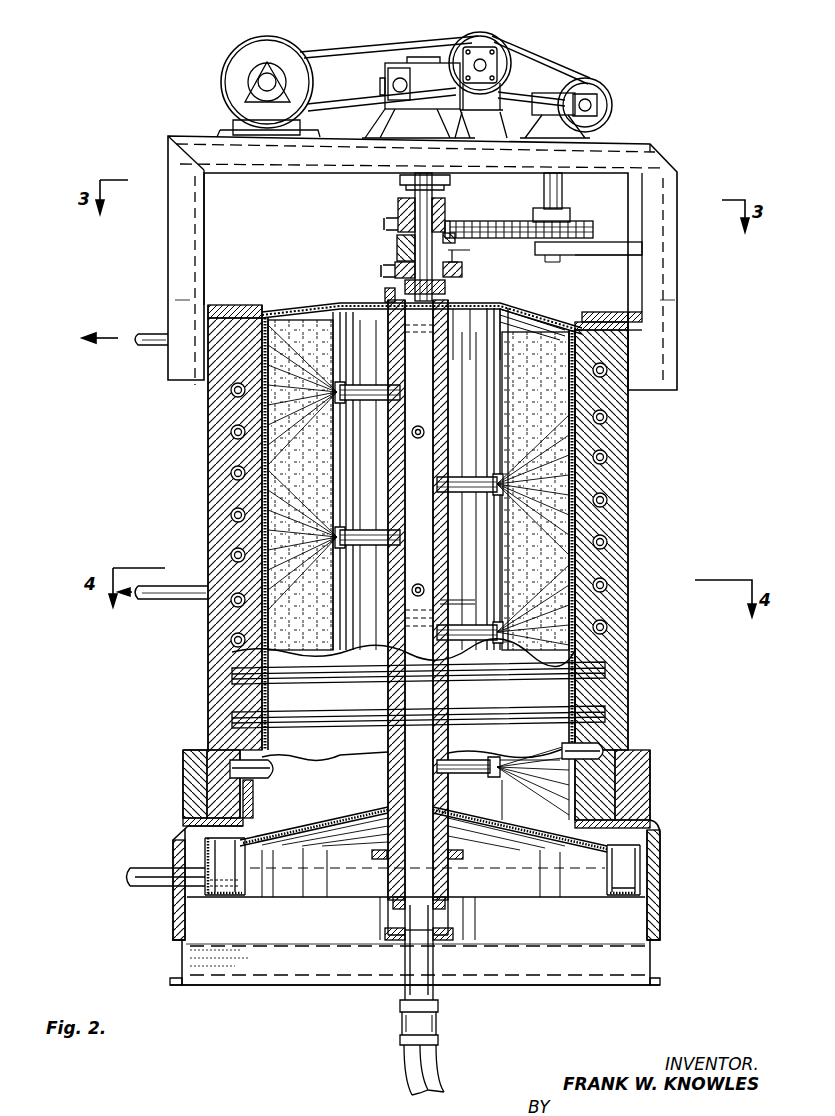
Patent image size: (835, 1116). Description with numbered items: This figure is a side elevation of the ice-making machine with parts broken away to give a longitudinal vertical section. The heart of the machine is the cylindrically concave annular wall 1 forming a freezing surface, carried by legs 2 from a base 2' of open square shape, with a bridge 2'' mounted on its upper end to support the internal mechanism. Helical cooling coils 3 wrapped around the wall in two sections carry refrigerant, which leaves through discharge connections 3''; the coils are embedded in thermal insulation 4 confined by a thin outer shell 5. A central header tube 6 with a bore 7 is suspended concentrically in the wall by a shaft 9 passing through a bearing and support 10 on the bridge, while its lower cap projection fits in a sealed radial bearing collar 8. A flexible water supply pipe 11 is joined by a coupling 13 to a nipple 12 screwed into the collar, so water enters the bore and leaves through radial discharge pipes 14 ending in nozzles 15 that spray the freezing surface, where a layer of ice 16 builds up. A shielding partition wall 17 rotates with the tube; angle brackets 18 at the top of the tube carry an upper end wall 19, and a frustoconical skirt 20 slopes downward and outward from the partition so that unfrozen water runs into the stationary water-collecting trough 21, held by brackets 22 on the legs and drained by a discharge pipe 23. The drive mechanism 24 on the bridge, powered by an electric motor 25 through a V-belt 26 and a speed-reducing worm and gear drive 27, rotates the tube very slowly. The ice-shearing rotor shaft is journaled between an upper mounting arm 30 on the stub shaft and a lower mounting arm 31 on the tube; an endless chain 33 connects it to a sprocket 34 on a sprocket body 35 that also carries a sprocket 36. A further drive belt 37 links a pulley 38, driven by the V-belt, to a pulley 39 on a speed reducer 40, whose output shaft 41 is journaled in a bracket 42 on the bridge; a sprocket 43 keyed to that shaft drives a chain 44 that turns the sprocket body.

The annular wall 1 is at (595, 527).
The legs 2 is at (414, 867).
The base 2' is at (429, 964).
The bridge 2'' is at (438, 263).
The cooling coils 3 is at (396, 534).
The discharge connections 3'' is at (171, 466).
The thermal insulation 4 is at (610, 653).
The outer shell 5 is at (615, 717).
The central header tube 6 is at (448, 555).
The bore 7 is at (408, 520).
The radial bearing collar 8 is at (385, 912).
The shaft 9 is at (405, 188).
The bearing and support 10 is at (448, 182).
The flexible water supply pipe 11 is at (406, 1060).
The nipple 12 is at (433, 960).
The coupling 13 is at (400, 1018).
The discharge pipes 14 is at (378, 398).
The nozzles 15 is at (350, 385).
The layer of ice 16 is at (575, 484).
The shielding partition wall 17 is at (492, 602).
The angle brackets 18 is at (490, 315).
The upper end wall 19 is at (525, 310).
The frustoconical skirt 20 is at (540, 825).
The water-collecting trough 21 is at (265, 880).
The brackets 22 is at (238, 915).
The discharge pipe 23 is at (152, 868).
The drive mechanism 24 is at (440, 94).
The electric motor 25 is at (233, 72).
The V-belt 26 is at (380, 50).
The speed-reducing worm and gear drive 27 is at (492, 60).
The upper mounting arm 30 is at (448, 292).
The lower mounting arm 31 is at (466, 857).
The endless chain 33 is at (395, 275).
The sprocket 34 is at (470, 262).
The sprocket body 35 is at (390, 207).
The sprocket 36 is at (395, 243).
The drive belt 37 is at (550, 64).
The pulley 38 is at (482, 36).
The pulley 39 is at (612, 106).
The speed reducer 40 is at (590, 90).
The output shaft 41 is at (562, 195).
The bracket 42 is at (640, 255).
The sprocket 43 is at (570, 220).
The chain 44 is at (525, 238).